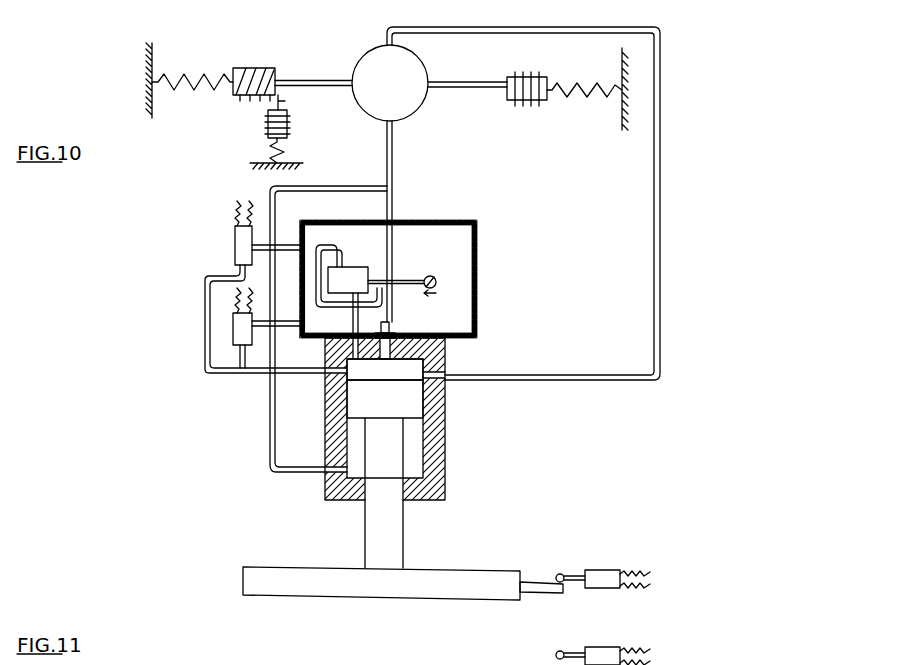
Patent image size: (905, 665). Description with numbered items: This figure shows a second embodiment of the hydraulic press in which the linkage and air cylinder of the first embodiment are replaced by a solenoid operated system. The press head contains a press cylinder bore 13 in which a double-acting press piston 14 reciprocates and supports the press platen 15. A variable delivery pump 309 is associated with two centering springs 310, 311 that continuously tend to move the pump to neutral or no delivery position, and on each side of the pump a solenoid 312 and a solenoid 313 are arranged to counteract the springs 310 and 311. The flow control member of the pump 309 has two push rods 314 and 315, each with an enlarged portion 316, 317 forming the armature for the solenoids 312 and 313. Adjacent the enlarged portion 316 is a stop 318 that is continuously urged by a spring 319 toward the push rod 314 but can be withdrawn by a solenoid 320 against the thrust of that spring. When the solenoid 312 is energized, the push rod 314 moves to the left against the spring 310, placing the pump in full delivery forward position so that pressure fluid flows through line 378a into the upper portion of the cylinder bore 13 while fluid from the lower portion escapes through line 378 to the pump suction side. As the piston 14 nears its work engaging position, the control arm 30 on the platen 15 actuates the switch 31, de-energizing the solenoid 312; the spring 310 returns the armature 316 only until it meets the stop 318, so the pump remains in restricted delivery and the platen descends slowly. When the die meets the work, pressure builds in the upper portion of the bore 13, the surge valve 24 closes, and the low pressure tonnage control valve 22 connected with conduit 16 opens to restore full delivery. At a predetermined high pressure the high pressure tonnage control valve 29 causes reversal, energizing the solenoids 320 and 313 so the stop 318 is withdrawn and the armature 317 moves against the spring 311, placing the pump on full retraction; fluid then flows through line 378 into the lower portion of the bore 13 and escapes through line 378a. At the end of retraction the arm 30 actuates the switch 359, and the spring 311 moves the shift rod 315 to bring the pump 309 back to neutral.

In FIG. 10, the centering spring 310 is at (192, 69).
In FIG. 10, the enlarged portion 316 is at (277, 60).
In FIG. 10, the solenoid 312 is at (250, 100).
In FIG. 10, the push rod 314 is at (337, 79).
In FIG. 10, the variable delivery pump 309 is at (421, 72).
In FIG. 10, the push rod 315 is at (492, 76).
In FIG. 10, the enlarged portion 317 is at (525, 77).
In FIG. 10, the solenoid 313 is at (530, 106).
In FIG. 10, the centering spring 311 is at (598, 88).
In FIG. 10, the stop 318 is at (285, 102).
In FIG. 10, the solenoid 320 is at (289, 124).
In FIG. 10, the spring 319 is at (285, 150).
In FIG. 10, the line 378a is at (566, 379).
In FIG. 10, the line 378 is at (272, 458).
In FIG. 10, the surge valve 24 is at (388, 364).
In FIG. 10, the press piston 14 is at (391, 408).
In FIG. 10, the press cylinder bore 13 is at (350, 461).
In FIG. 10, the high pressure tonnage control valve 29 is at (235, 245).
In FIG. 10, the conduit 16 is at (205, 341).
In FIG. 10, the low pressure tonnage control valve 22 is at (240, 344).
In FIG. 10, the press platen 15 is at (306, 573).
In FIG. 10, the control arm 30 is at (538, 578).
In FIG. 10, the switch 359 is at (605, 570).
In FIG. 11, the switch 31 is at (600, 648).